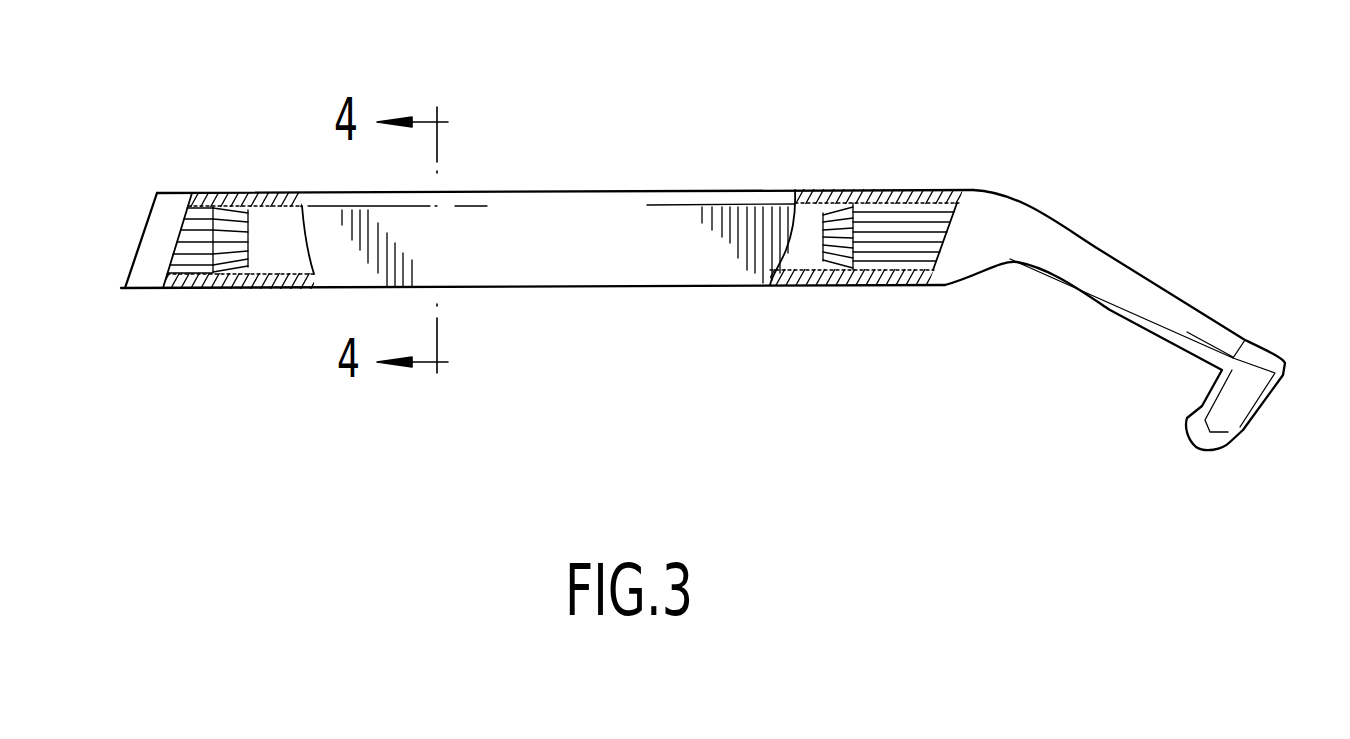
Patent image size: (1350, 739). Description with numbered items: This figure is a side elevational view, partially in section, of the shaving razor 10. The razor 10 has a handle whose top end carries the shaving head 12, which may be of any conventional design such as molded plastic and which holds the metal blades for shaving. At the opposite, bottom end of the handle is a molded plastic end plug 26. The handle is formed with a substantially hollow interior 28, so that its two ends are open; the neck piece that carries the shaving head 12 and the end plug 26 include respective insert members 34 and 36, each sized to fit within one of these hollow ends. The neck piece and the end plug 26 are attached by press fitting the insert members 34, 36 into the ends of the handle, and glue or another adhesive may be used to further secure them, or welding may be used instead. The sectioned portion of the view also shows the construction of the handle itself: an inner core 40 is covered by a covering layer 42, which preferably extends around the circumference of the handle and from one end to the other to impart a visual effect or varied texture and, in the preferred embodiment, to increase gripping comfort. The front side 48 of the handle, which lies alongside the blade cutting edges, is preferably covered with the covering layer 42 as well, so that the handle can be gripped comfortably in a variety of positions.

The razor 10 is at (602, 140).
The shaving head 12 is at (1279, 335).
The end plug 26 is at (135, 297).
The hollow interior 28 is at (277, 230).
The insert member 34 is at (897, 258).
The insert member 36 is at (191, 235).
The inner core 40 is at (268, 288).
The covering layer 42 is at (200, 289).
The front side 48 is at (767, 305).